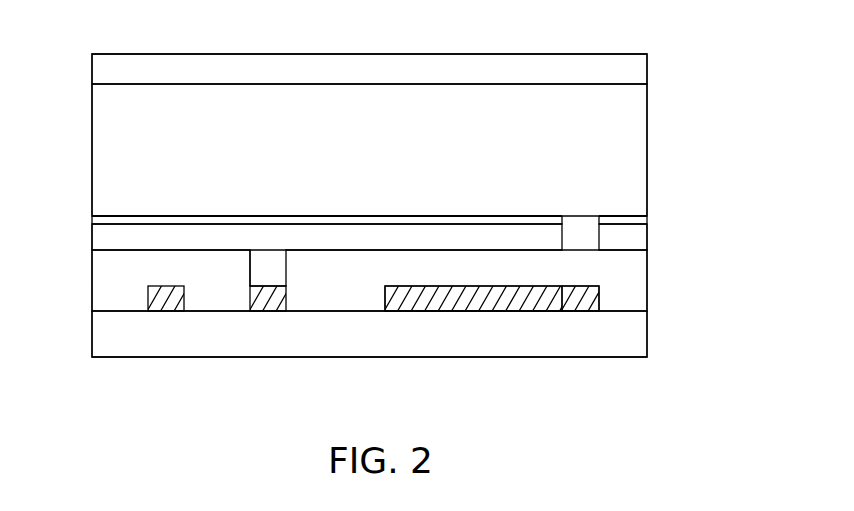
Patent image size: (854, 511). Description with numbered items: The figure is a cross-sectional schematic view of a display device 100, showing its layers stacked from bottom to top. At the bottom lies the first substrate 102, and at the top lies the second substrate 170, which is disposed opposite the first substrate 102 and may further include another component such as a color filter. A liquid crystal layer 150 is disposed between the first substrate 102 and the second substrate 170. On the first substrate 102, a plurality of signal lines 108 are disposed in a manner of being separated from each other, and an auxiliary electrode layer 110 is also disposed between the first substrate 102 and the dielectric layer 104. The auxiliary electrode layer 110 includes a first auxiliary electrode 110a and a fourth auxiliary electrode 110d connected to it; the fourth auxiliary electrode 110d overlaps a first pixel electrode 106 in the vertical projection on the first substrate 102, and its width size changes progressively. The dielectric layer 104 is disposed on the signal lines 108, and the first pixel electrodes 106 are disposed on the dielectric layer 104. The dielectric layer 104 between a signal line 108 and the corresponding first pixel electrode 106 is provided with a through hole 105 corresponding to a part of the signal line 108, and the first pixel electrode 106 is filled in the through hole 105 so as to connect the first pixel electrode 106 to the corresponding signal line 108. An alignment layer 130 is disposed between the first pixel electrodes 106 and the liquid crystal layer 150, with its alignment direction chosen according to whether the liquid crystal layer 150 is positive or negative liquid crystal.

The display device 100 is at (66, 58).
The second substrate 170 is at (625, 71).
The liquid crystal layer 150 is at (625, 125).
The alignment layer 130 is at (635, 219).
The first pixel electrode 106 is at (635, 242).
The dielectric layer 104 is at (625, 275).
The first substrate 102 is at (625, 340).
The signal line 108 is at (160, 302).
The through hole 105 is at (248, 272).
The fourth auxiliary electrode 110d is at (512, 302).
The first auxiliary electrode 110a is at (570, 302).
The auxiliary electrode layer 110 is at (602, 408).